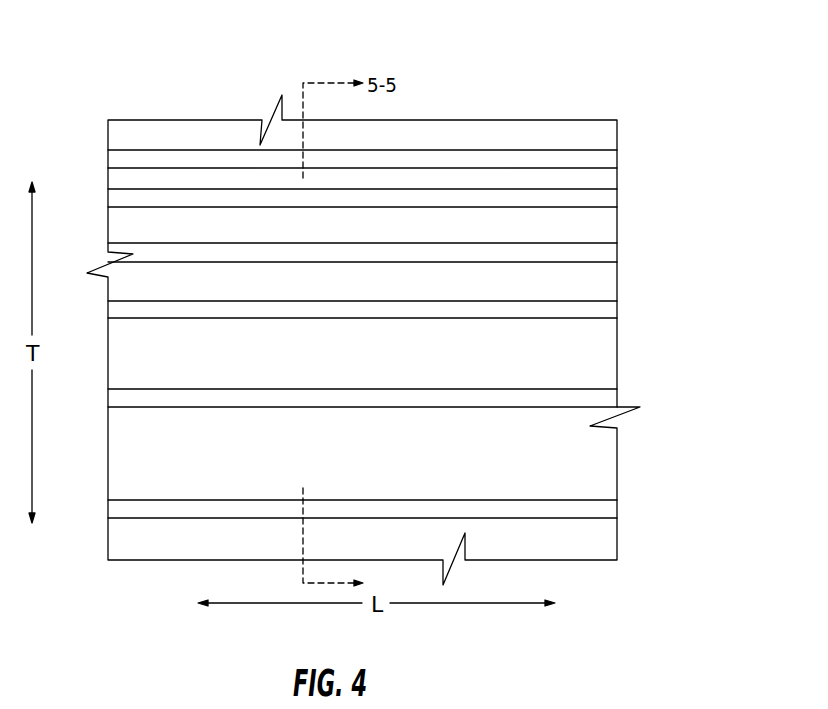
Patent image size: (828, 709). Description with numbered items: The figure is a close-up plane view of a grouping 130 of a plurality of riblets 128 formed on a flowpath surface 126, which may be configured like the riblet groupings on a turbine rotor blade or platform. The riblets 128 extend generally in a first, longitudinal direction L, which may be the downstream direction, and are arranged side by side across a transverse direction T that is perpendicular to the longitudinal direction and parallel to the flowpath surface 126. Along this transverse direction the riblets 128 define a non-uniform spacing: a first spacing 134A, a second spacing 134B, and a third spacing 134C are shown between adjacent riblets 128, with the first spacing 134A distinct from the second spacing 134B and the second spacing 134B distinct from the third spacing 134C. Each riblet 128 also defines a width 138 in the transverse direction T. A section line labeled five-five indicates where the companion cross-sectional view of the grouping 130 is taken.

The grouping 130 is at (604, 76).
The riblets 128 is at (600, 157).
The flowpath surface 126 is at (383, 180).
The first spacing 134A is at (542, 171).
The second spacing 134B is at (542, 210).
The third spacing 134C is at (542, 265).
The width 138 is at (225, 430).